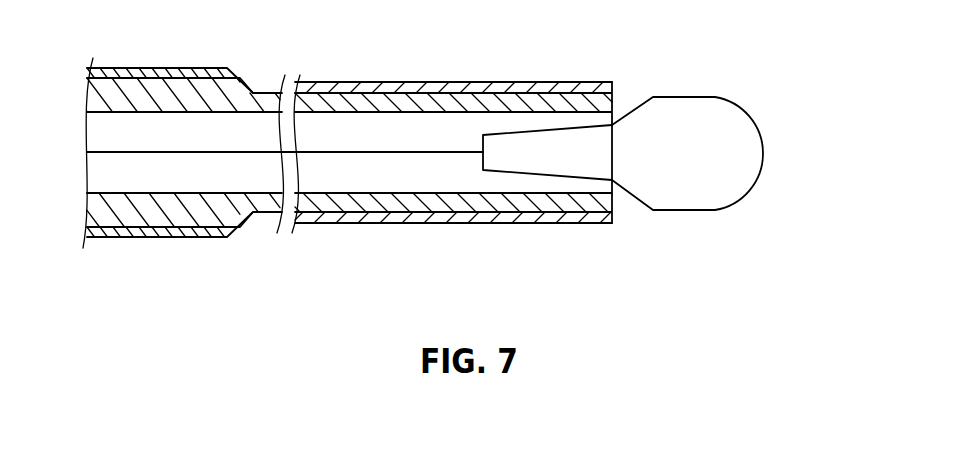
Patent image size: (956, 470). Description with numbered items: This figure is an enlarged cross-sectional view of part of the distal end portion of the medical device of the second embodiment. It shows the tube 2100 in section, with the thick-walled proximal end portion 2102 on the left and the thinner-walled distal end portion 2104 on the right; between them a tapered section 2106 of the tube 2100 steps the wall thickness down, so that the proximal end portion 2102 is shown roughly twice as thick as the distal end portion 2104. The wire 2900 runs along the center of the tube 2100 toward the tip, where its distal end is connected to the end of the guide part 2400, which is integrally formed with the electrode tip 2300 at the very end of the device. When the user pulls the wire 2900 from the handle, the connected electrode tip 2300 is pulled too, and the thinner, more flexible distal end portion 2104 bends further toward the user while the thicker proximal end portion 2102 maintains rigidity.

The tube 2100 is at (448, 110).
The proximal end portion of the tube 2102 is at (168, 100).
The distal end portion of the tube 2104 is at (541, 106).
The tapered section of the tube 2106 is at (235, 96).
The electrode tip 2300 is at (742, 107).
The guide part 2400 is at (517, 172).
The wire 2900 is at (390, 154).